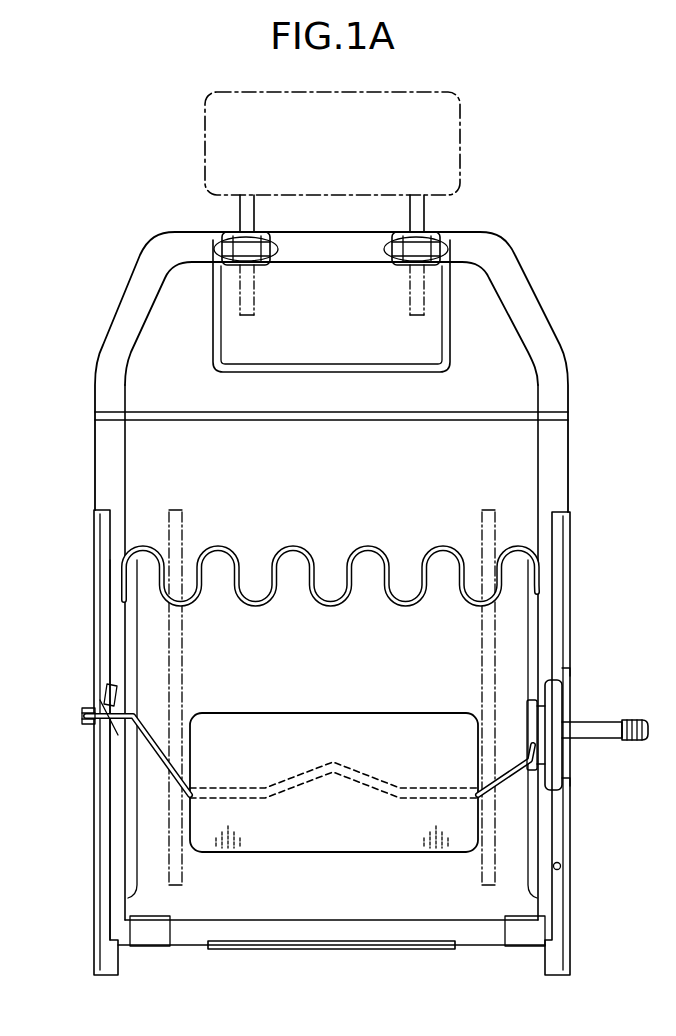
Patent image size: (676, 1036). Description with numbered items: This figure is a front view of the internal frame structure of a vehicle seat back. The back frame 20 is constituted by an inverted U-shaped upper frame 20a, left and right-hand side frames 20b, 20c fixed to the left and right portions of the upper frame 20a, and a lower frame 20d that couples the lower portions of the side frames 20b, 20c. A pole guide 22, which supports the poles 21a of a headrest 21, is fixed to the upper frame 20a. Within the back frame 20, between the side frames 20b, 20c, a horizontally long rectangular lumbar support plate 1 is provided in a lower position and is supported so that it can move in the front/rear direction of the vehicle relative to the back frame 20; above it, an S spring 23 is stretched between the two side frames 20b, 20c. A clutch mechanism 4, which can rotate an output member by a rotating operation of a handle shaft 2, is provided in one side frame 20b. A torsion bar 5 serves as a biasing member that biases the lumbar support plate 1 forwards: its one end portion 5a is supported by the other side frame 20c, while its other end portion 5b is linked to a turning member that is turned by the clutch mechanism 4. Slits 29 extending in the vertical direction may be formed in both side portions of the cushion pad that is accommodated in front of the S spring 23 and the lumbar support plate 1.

The lumbar support plate 1 is at (332, 713).
The handle shaft 2 is at (612, 723).
The clutch mechanism 4 is at (577, 695).
The torsion bar 5 is at (155, 743).
The one end portion of the torsion bar 5a is at (112, 685).
The other end portion of the torsion bar 5b is at (508, 781).
The back frame 20 is at (572, 374).
The upper frame 20a is at (541, 309).
The side frame 20b is at (571, 536).
The side frame 20c is at (94, 537).
The lower frame 20d is at (283, 951).
The headrest 21 is at (462, 135).
The poles 21a is at (238, 213).
The pole guide 22 is at (222, 246).
The S spring 23 is at (306, 548).
The slits 29 is at (173, 511).